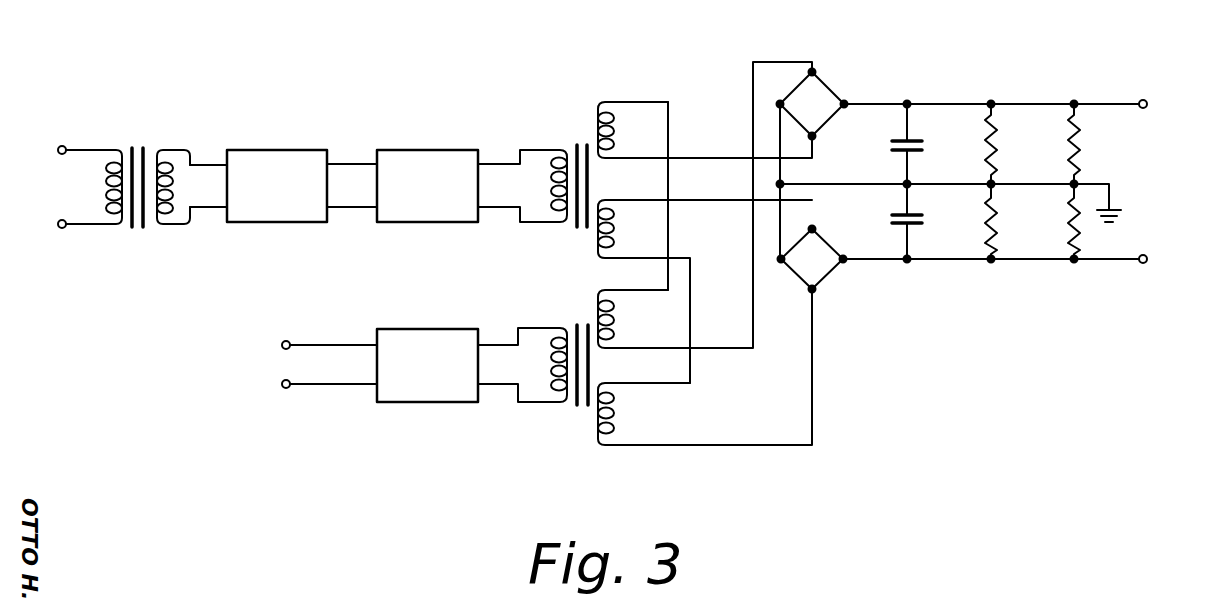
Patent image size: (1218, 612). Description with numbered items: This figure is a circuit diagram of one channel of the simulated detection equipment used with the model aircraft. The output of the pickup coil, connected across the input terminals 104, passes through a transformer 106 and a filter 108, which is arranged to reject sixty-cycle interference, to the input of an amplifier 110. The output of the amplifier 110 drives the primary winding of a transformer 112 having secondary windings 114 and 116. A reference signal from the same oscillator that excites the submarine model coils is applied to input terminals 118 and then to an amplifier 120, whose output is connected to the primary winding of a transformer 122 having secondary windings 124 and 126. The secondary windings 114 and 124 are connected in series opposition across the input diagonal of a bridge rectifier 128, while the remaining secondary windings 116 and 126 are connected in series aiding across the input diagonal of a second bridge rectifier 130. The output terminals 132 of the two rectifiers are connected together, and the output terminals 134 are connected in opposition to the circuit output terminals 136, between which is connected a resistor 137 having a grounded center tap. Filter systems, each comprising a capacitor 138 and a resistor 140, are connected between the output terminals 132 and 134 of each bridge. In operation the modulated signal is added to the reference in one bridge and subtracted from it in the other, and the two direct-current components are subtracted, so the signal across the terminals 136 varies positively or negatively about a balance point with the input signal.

The input terminals 104 is at (58, 153).
The transformer 106 is at (137, 236).
The filter 108 is at (284, 128).
The amplifier 110 is at (425, 150).
The transformer 112 is at (581, 130).
The secondary winding 114 is at (613, 142).
The secondary winding 116 is at (613, 232).
The input terminals 118 is at (280, 349).
The amplifier 120 is at (442, 329).
The transformer 122 is at (579, 410).
The secondary winding 124 is at (613, 320).
The secondary winding 126 is at (613, 427).
The bridge rectifier 128 is at (832, 74).
The bridge rectifier 130 is at (822, 294).
The output terminals 132 is at (776, 101).
The output terminals 134 is at (846, 109).
The circuit output terminals 136 is at (1158, 92).
The resistor 137 is at (1079, 141).
The capacitor 138 is at (890, 150).
The resistor 140 is at (996, 141).